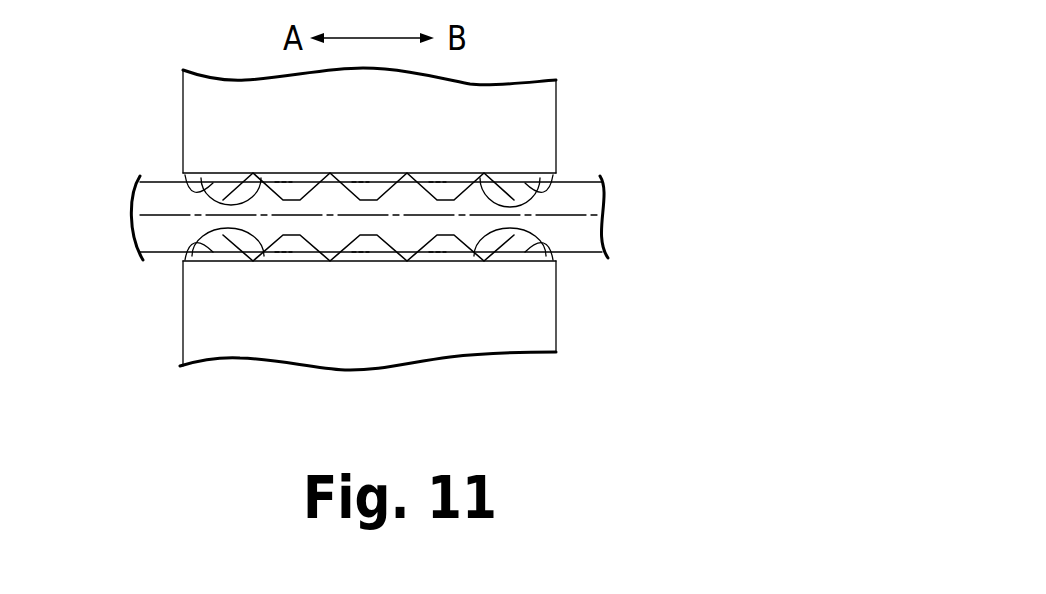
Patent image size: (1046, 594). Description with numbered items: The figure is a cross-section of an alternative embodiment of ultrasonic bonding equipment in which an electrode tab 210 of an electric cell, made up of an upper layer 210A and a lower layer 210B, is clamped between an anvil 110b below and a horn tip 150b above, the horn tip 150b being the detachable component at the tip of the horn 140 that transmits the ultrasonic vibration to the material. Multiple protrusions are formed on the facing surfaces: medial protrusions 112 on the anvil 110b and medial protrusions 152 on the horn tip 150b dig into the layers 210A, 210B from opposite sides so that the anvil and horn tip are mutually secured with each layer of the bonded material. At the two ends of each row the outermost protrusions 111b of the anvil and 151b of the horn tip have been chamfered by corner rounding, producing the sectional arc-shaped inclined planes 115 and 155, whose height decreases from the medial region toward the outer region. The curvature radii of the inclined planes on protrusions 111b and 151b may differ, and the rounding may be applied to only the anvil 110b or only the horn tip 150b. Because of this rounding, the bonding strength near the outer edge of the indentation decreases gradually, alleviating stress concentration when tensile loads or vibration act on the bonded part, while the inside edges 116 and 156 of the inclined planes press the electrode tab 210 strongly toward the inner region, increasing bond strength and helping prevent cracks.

The anvil 110b is at (397, 345).
The outermost protrusion 111b is at (217, 256).
The protrusion 112 is at (435, 262).
The arc-shaped inclined plane 115 is at (187, 237).
The inside edge 116 is at (250, 250).
The horn 140 is at (576, 76).
The horn tip 150b is at (477, 97).
The outermost protrusion 151b is at (213, 192).
The protrusion 152 is at (432, 185).
The arc-shaped inclined plane 155 is at (190, 198).
The inside edge 156 is at (275, 190).
The electrode tab 210 is at (465, 213).
The electrode tab layer 210A is at (590, 193).
The electrode tab layer 210B is at (590, 240).